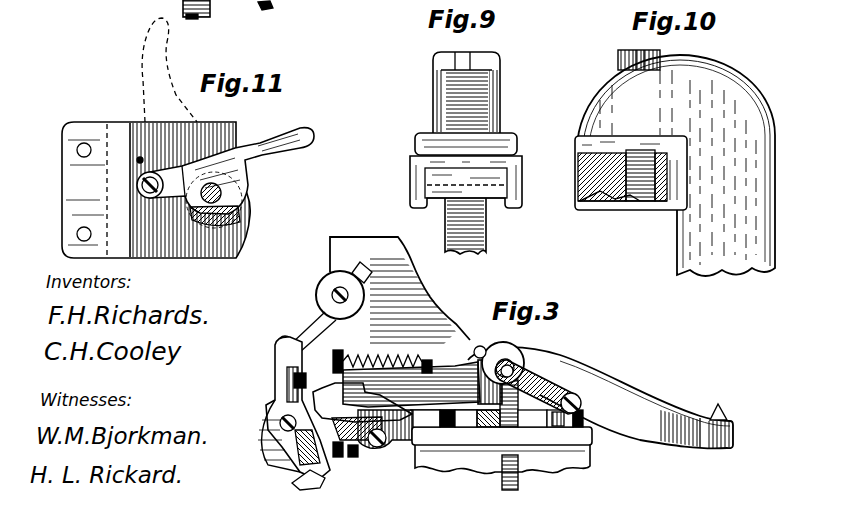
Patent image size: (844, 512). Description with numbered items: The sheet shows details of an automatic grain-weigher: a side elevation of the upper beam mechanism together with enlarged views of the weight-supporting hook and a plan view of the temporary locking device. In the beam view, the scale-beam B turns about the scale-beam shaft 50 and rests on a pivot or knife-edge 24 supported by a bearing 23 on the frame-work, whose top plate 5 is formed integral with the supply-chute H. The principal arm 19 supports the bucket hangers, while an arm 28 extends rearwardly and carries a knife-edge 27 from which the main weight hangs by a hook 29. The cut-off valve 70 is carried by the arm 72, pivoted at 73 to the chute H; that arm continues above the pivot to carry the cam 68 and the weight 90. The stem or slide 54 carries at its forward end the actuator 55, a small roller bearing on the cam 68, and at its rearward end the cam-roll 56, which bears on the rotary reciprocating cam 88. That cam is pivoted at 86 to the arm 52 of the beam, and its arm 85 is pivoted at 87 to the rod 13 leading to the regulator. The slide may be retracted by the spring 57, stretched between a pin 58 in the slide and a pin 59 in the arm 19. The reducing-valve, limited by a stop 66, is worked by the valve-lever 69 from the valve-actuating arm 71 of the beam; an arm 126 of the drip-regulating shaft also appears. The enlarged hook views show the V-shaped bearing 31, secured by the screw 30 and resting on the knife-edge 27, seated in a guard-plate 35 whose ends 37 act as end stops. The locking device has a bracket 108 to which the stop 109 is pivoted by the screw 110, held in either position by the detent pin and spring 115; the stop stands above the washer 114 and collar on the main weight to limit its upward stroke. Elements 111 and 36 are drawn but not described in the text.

In FIG. 11, the bracket 108 is at (66, 192).
In FIG. 11, the stop 109 is at (140, 42).
In FIG. 11, the screw 110 is at (148, 175).
In FIG. 11, the lever foot 111 is at (232, 210).
In FIG. 11, the washer 114 is at (240, 193).
In FIG. 11, the detent pin and spring 115 is at (200, 148).
In FIG. 11, the valve-lever 69 is at (210, 3).
In FIG. 11, the stop 66 is at (272, 5).
In FIG. 11, the valve-actuating arm 71 is at (192, 18).
In FIG. 9, the screw 30 is at (486, 54).
In FIG. 10, the screw 30 is at (623, 54).
In FIG. 9, the guard-plate 35 is at (489, 162).
In FIG. 10, the guard-plate 35 is at (631, 173).
In FIG. 9, the ends 37 is at (410, 190).
In FIG. 9, the hook 29 is at (446, 228).
In FIG. 10, the hook 29 is at (757, 188).
In FIG. 9, the V-shaped bearing 31 is at (474, 180).
In FIG. 10, the V-shaped bearing 31 is at (616, 196).
In FIG. 3, the supply-chute H is at (378, 243).
In FIG. 3, the weight 90 is at (328, 283).
In FIG. 3, the actuator 55 is at (307, 339).
In FIG. 3, the pivot 73 is at (283, 422).
In FIG. 3, the cam 68 is at (294, 381).
In FIG. 3, the arm 72 is at (300, 455).
In FIG. 3, the cut-off valve 70 is at (308, 480).
In FIG. 3, the principal arm 19 is at (362, 402).
In FIG. 3, the pin 58 is at (362, 344).
In FIG. 3, the spring 57 is at (392, 360).
In FIG. 3, the pin 59 is at (432, 366).
In FIG. 3, the stem or slide 54 is at (470, 370).
In FIG. 3, the arm 126 is at (387, 450).
In FIG. 3, the top plate 5 is at (592, 436).
In FIG. 3, the rod 13 is at (518, 480).
In FIG. 3, the pivot or knife-edge 24 is at (478, 430).
In FIG. 3, the bearing 23 is at (500, 413).
In FIG. 3, the rotary reciprocating cam 88 is at (519, 403).
In FIG. 3, the block 36 is at (550, 407).
In FIG. 3, the scale-beam B is at (565, 360).
In FIG. 3, the arm 28 is at (644, 408).
In FIG. 3, the pivot or knife-edge 27 is at (722, 408).
In FIG. 3, the scale-beam shaft 50 is at (504, 352).
In FIG. 3, the cam-roll 56 is at (479, 346).
In FIG. 3, the pivot 87 is at (520, 360).
In FIG. 3, the arm 52 is at (550, 378).
In FIG. 3, the arm 85 is at (549, 391).
In FIG. 3, the pivot 86 is at (581, 401).